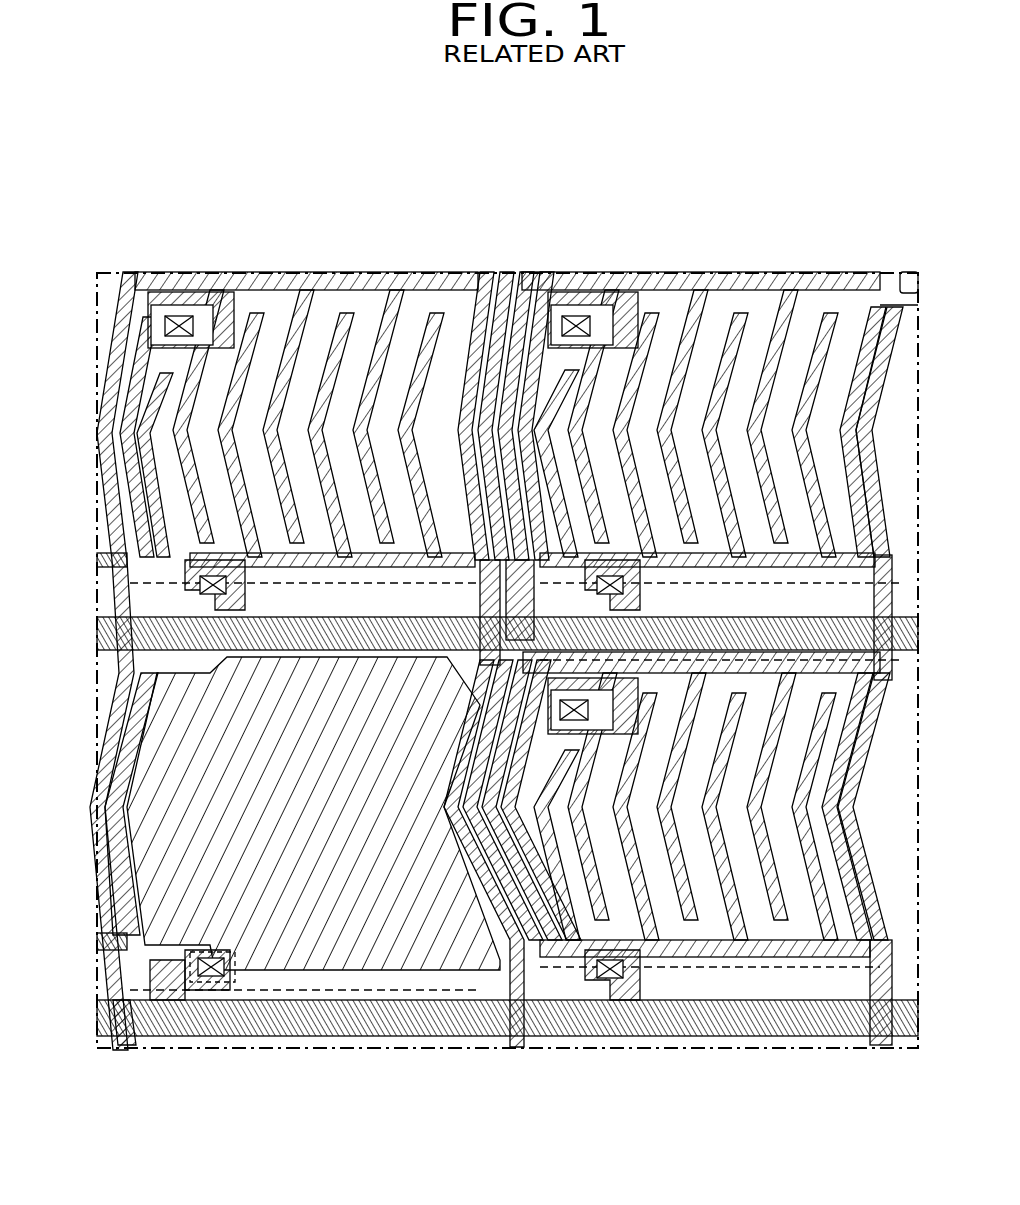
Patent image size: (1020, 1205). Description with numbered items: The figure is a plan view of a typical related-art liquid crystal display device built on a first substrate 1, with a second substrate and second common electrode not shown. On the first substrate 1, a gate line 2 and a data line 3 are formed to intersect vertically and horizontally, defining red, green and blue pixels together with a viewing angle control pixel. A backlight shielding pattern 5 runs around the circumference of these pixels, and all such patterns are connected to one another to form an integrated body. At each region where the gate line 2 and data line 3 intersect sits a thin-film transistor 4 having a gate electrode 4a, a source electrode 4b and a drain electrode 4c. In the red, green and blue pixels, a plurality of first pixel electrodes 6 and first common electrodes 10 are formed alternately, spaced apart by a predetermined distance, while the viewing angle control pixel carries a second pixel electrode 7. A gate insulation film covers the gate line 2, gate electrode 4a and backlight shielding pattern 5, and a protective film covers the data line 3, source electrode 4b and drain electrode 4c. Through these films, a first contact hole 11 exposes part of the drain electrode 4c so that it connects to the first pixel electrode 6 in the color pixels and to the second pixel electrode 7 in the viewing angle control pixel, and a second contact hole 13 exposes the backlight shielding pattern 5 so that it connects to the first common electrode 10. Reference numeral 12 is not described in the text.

The first substrate 1 is at (803, 247).
The gate line 2 is at (306, 1020).
The data line 3 is at (108, 968).
The thin-film transistor 4 is at (170, 1066).
The gate electrode 4a is at (160, 1002).
The source electrode 4b is at (133, 1040).
The drain electrode 4c is at (183, 1040).
The backlight shielding pattern 5 is at (120, 890).
The first pixel electrode 6 is at (650, 900).
The second pixel electrode 7 is at (365, 900).
The first common electrode 10 is at (722, 975).
The first contact hole 11 is at (604, 1002).
The contact hole 12 is at (225, 978).
The second contact hole 13 is at (575, 316).